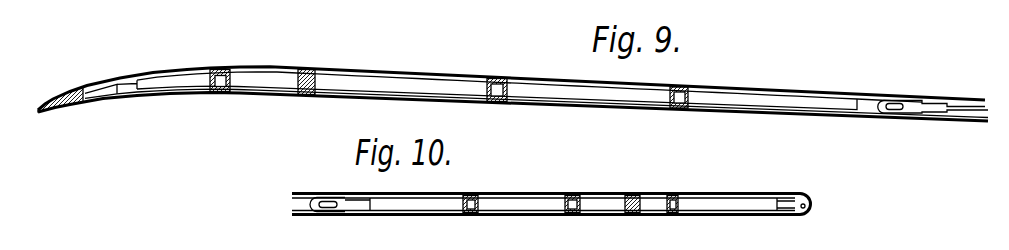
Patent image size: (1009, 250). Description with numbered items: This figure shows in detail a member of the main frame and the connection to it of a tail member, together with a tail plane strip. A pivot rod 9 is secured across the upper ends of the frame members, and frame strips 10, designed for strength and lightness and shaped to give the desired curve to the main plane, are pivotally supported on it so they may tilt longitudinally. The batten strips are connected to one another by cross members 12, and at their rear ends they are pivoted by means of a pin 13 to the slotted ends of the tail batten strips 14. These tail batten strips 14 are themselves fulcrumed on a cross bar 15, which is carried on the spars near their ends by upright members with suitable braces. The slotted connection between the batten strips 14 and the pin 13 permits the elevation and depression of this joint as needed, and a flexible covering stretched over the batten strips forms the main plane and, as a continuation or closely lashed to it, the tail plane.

In FIG. 9, the pivot rod 9 is at (318, 72).
In FIG. 9, the frame strip 10 is at (247, 68).
In FIG. 9, the cross member 12 is at (208, 70).
In FIG. 9, the pin 13 is at (897, 101).
In FIG. 9, the batten strip 14 is at (961, 99).
In FIG. 10, the cross bar 15 is at (632, 200).